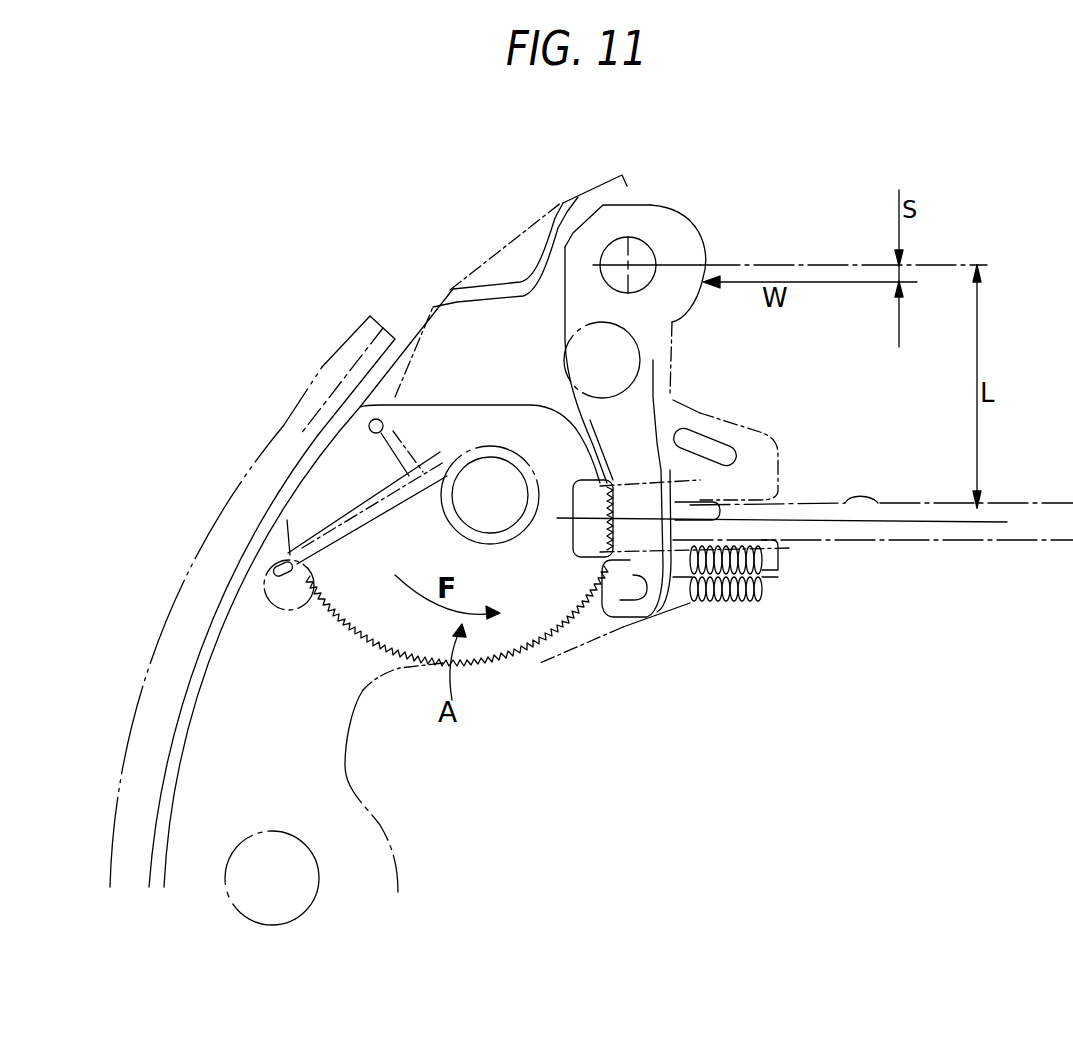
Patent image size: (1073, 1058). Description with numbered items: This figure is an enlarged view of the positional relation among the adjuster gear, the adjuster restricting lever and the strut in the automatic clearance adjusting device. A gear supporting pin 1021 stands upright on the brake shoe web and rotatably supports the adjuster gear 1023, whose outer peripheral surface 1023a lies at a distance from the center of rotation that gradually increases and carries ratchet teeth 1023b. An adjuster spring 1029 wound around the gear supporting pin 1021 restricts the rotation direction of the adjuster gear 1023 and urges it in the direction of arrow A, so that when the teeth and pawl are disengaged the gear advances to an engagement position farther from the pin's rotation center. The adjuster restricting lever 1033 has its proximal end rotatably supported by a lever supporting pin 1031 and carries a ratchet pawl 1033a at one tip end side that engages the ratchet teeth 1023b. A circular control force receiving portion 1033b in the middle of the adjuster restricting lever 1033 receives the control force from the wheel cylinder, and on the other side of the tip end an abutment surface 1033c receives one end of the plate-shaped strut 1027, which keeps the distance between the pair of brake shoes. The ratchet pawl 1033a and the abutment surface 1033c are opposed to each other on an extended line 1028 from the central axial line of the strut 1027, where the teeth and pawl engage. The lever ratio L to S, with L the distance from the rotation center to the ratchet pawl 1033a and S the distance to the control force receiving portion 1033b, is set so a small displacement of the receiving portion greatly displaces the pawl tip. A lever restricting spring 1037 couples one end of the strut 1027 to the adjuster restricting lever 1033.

The gear supporting pin 1021 is at (477, 480).
The adjuster gear 1023 is at (350, 443).
The outer peripheral surface 1023a is at (360, 633).
The ratchet teeth 1023b is at (573, 617).
The strut 1027 is at (1031, 528).
The extended line 1028 is at (917, 523).
The adjuster spring 1029 is at (347, 440).
The lever supporting pin 1031 is at (638, 253).
The adjuster restricting lever 1033 is at (587, 297).
The ratchet pawl 1033a is at (683, 447).
The control force receiving portion 1033b is at (700, 257).
The abutment surface 1033c is at (652, 528).
The lever restricting spring 1037 is at (733, 590).